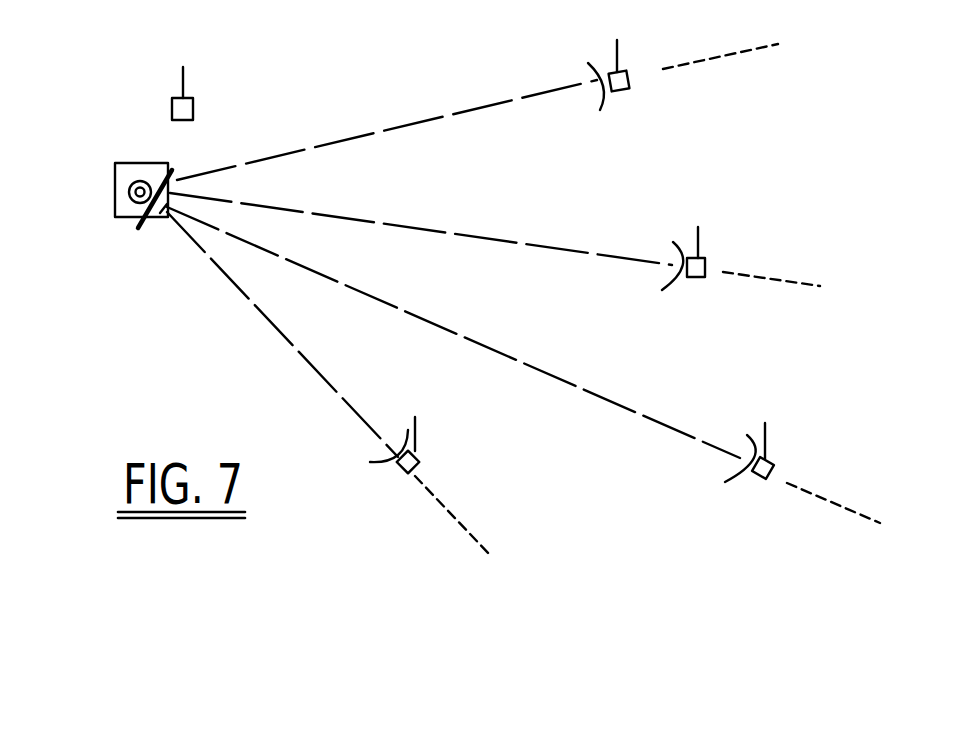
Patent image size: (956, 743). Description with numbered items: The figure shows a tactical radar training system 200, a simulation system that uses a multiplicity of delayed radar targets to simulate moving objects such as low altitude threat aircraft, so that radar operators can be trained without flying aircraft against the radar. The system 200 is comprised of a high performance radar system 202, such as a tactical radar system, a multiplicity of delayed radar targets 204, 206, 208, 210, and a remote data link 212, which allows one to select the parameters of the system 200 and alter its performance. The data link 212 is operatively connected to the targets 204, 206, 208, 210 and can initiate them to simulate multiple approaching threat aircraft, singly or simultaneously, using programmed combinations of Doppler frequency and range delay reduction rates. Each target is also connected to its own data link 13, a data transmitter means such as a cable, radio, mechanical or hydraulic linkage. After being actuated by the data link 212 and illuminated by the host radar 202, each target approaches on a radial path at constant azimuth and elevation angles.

The tactical radar training system 200 is at (384, 46).
The high performance radar system 202 is at (147, 238).
The remote data link 212 is at (122, 192).
The delayed radar target 204 is at (597, 75).
The delayed radar target 206 is at (672, 280).
The delayed radar target 208 is at (740, 467).
The delayed radar target 210 is at (383, 458).
The data link 13 is at (193, 105).